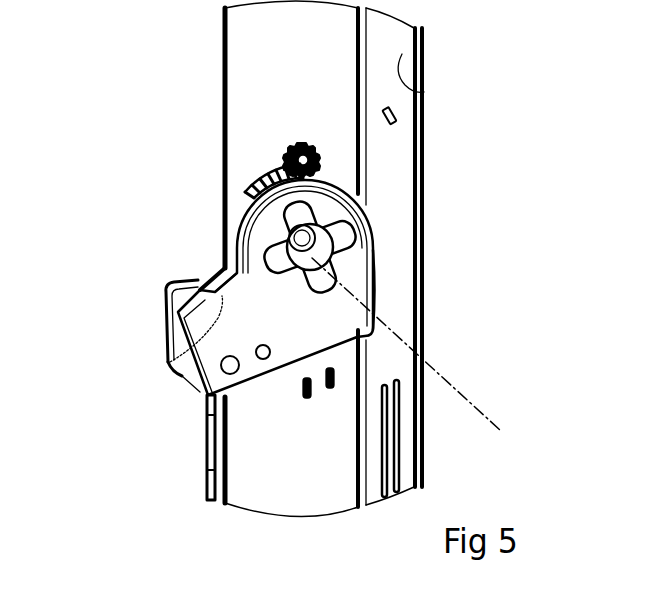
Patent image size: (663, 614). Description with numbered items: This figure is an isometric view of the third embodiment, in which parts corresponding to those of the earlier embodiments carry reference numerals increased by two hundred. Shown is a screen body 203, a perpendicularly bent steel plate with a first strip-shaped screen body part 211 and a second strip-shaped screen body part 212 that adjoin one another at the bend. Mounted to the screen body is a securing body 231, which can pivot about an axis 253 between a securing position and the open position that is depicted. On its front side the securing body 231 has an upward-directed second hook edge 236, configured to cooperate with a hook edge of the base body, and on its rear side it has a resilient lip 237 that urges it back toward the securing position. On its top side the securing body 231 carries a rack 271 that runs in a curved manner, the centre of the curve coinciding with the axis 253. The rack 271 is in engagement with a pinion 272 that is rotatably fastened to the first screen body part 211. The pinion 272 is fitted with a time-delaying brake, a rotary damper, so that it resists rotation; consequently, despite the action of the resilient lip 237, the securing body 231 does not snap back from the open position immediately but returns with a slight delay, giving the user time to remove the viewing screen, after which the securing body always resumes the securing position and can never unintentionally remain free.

The screen body 203 is at (181, 119).
The first screen body part 211 is at (305, 65).
The second screen body part 212 is at (425, 93).
The securing body 231 is at (318, 335).
The second hook edge 236 is at (170, 362).
The resilient lip 237 is at (377, 290).
The axis 253 is at (480, 408).
The rack 271 is at (262, 178).
The pinion 272 is at (288, 142).